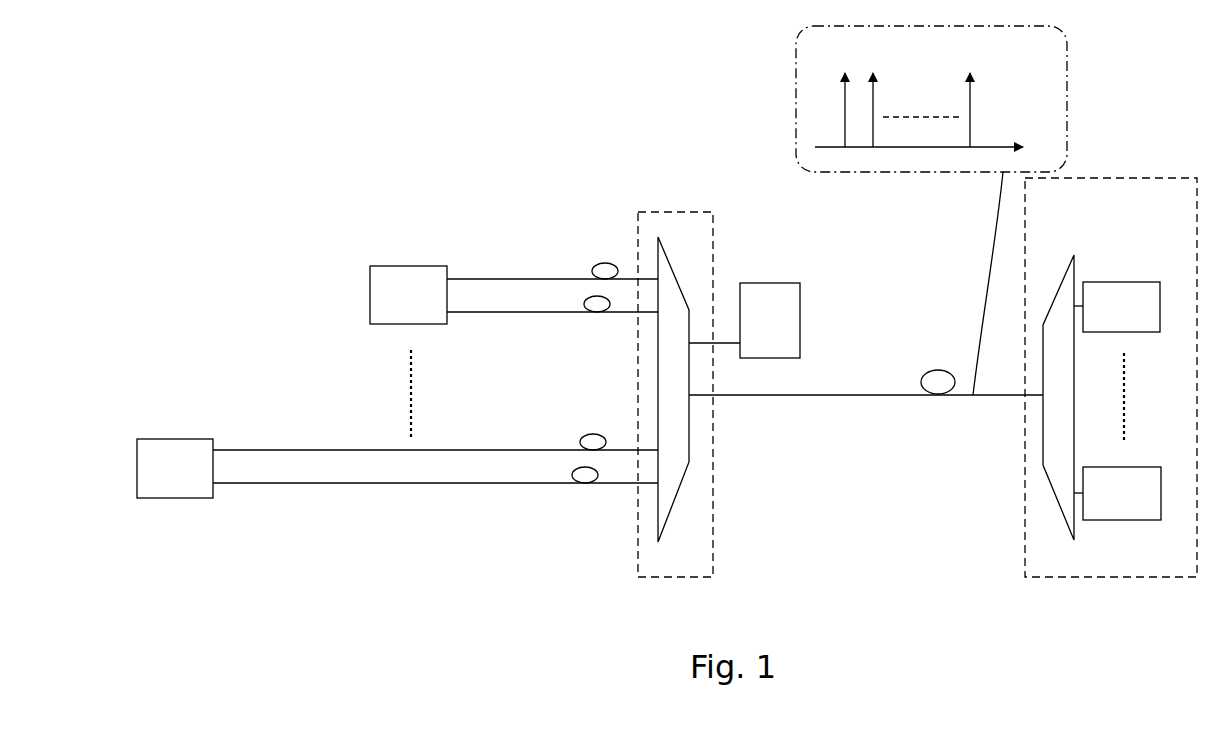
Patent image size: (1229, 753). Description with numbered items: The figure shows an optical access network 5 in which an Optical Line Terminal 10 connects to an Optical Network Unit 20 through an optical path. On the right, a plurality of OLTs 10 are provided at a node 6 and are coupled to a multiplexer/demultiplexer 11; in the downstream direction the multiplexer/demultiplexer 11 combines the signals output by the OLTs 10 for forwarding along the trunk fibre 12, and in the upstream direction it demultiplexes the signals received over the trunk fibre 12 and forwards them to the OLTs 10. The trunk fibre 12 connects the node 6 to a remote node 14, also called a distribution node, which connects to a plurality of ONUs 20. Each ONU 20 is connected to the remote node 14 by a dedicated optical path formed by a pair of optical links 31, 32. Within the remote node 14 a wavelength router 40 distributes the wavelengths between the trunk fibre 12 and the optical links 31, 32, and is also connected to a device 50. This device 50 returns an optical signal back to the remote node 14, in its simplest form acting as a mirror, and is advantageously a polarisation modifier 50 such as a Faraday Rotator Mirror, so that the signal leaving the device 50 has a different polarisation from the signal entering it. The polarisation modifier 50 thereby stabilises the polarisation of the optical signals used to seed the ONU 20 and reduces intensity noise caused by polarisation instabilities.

The optical access network 5 is at (254, 103).
The node 6 is at (1167, 178).
The Optical Line Terminal 10 is at (1115, 281).
The multiplexer/demultiplexer 11 is at (1075, 253).
The trunk fibre 12 is at (857, 395).
The remote node 14 is at (659, 211).
The Optical Network Unit 20 is at (415, 264).
The optical link 31 is at (560, 279).
The optical link 32 is at (563, 312).
The wavelength router 40 is at (677, 273).
The polarisation modifier 50 is at (801, 300).